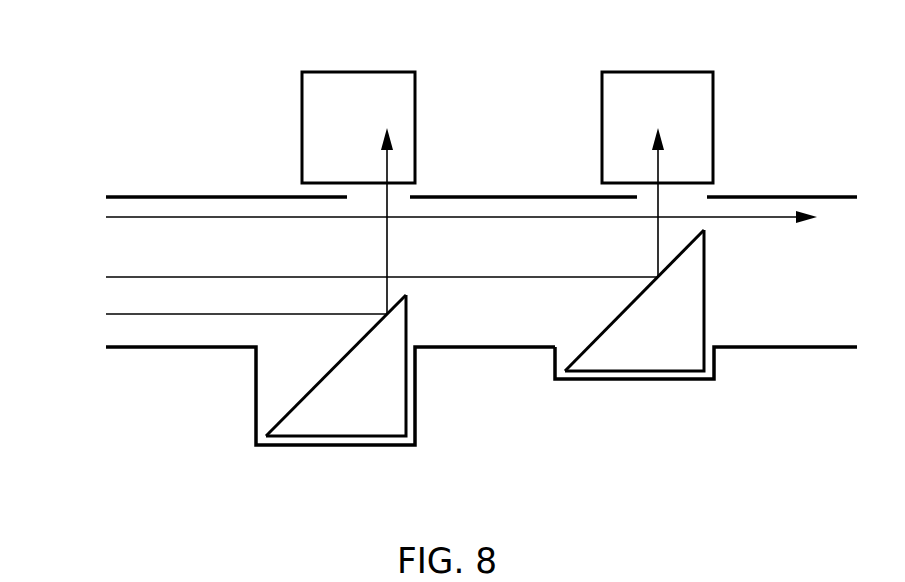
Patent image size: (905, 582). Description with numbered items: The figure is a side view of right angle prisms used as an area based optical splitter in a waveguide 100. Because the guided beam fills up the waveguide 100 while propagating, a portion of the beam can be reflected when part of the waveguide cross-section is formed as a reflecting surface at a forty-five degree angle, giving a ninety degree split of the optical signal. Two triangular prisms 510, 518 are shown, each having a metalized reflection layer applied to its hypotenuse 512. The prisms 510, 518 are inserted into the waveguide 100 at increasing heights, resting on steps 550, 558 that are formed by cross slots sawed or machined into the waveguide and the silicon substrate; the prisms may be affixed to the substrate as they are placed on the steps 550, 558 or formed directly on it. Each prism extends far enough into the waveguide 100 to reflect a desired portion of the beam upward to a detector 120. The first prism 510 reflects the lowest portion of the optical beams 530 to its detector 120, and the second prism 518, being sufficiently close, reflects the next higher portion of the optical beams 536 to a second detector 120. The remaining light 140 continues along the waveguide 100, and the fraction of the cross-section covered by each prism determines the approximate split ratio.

The waveguide 100 is at (853, 198).
The detector 120 is at (352, 72).
The light beam 140 is at (120, 217).
The triangular prism 510 is at (357, 437).
The hypotenuse 512 is at (285, 413).
The triangular prism 518 is at (647, 372).
The lowest portion of the optical beams 530 is at (120, 314).
The next higher portion of the optical beams 536 is at (238, 277).
The step 550 is at (273, 446).
The step 558 is at (570, 380).